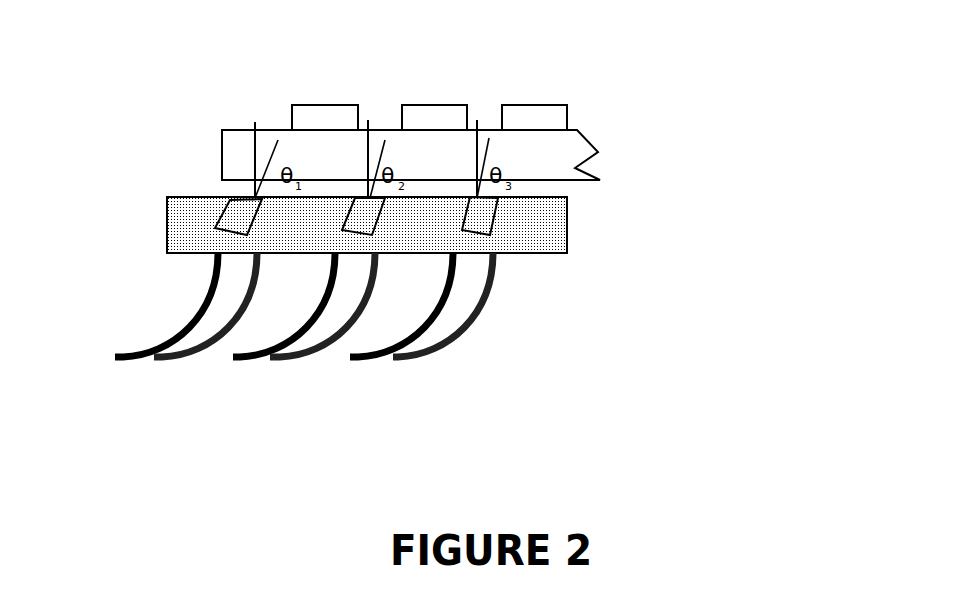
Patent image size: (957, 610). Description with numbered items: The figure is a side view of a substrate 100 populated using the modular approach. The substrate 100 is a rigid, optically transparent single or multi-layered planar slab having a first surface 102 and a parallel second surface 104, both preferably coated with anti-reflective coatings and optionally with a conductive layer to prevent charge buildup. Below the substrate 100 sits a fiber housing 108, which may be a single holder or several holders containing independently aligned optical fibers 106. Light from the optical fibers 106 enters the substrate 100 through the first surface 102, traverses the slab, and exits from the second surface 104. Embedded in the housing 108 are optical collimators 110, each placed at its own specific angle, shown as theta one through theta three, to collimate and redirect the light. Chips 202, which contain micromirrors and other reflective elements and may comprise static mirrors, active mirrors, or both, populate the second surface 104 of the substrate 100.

The substrate 100 is at (609, 153).
The first surface 102 is at (573, 201).
The second surface 104 is at (608, 102).
The optical fibers 106 is at (497, 297).
The fiber housing 108 is at (572, 243).
The optical collimators 110 is at (225, 207).
The chips 202 is at (535, 106).